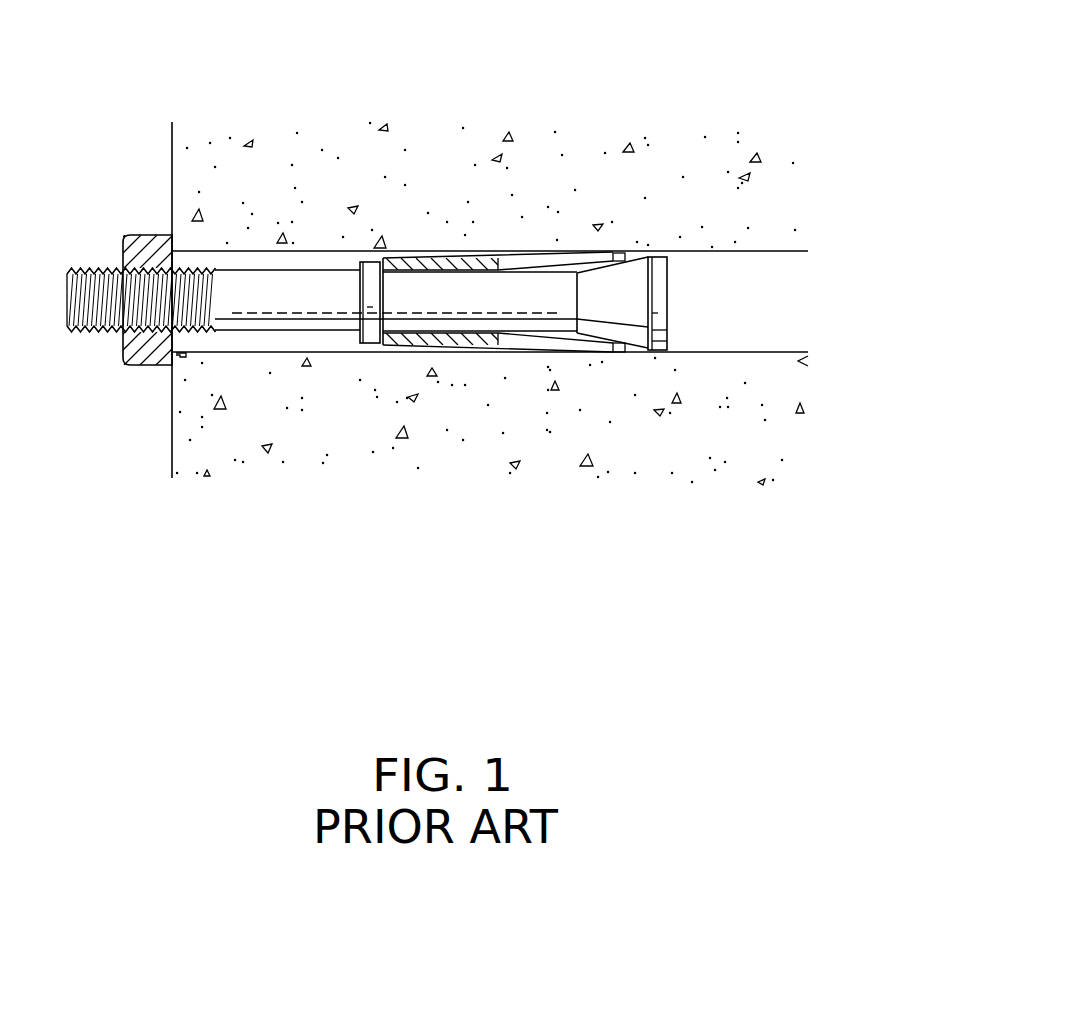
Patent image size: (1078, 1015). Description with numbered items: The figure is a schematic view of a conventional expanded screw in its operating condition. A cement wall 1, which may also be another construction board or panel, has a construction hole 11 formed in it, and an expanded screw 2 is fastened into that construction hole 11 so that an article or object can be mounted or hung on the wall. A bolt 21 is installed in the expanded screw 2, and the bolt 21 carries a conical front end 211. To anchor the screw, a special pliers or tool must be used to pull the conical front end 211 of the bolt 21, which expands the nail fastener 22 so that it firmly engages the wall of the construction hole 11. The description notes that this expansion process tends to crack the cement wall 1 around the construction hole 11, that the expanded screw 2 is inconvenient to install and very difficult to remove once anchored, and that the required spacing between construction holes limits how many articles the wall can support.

The cement wall 1 is at (183, 155).
The construction hole 11 is at (243, 249).
The expanded screw 2 is at (277, 330).
The bolt 21 is at (328, 317).
The nail fastener 22 is at (545, 352).
The conical front end 211 is at (641, 332).